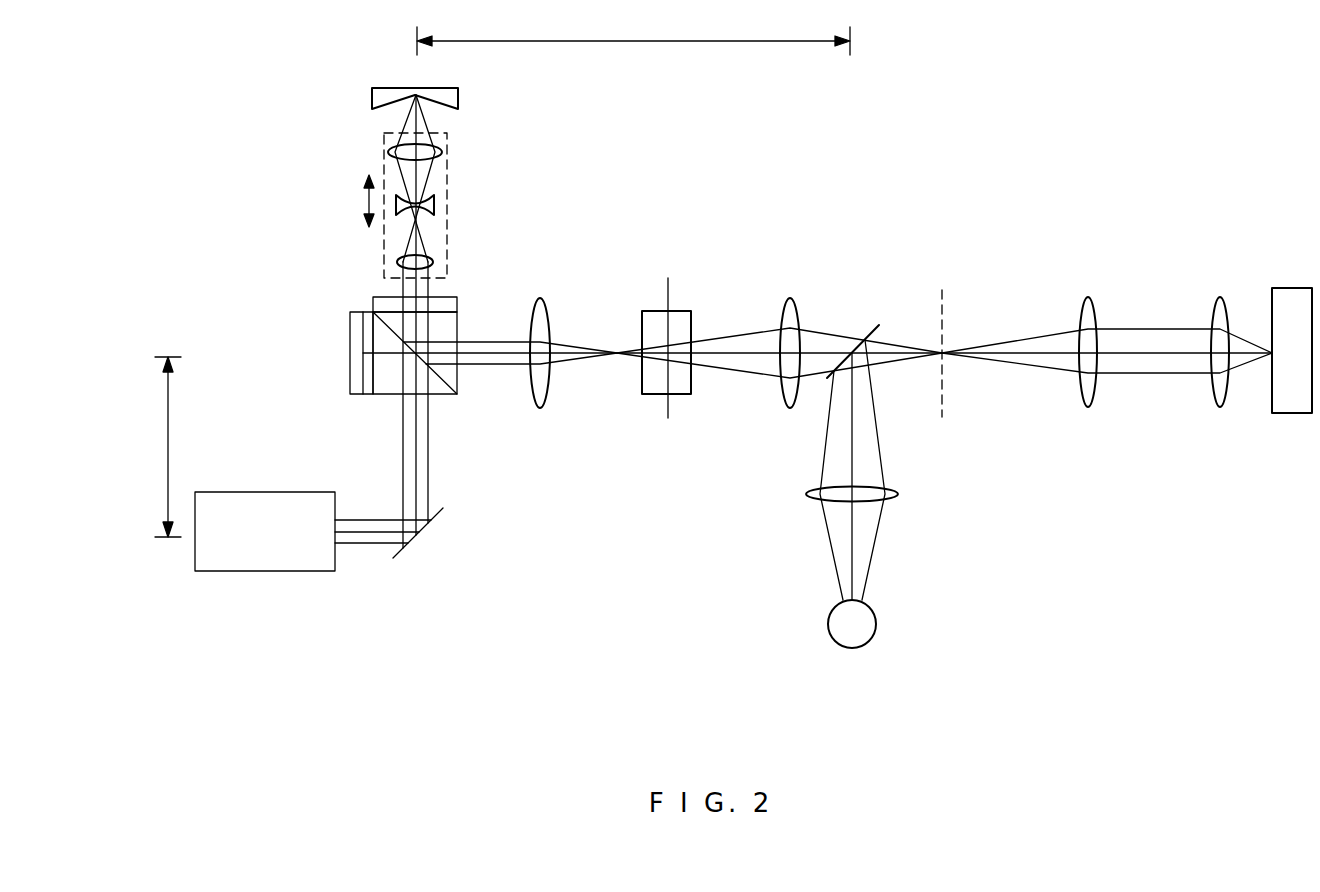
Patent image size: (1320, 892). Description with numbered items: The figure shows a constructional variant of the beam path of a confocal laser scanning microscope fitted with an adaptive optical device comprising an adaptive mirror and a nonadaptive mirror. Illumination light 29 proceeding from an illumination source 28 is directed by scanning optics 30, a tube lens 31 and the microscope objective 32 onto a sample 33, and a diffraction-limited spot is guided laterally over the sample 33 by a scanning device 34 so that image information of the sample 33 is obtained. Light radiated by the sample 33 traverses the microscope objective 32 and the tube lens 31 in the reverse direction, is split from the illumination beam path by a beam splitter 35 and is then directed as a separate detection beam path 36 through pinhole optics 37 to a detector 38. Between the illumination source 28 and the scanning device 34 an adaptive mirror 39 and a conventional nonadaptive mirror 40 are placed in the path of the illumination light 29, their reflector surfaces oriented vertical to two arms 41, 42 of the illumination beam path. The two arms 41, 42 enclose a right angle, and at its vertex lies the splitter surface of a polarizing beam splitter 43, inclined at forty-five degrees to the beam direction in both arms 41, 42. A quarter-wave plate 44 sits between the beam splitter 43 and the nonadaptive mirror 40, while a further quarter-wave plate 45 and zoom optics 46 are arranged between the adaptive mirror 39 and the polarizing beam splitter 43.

The illumination source 28 is at (313, 572).
The illumination light 29 is at (373, 540).
The scanning optics 30 is at (798, 303).
The tube lens 31 is at (1090, 405).
The microscope objective 32 is at (1214, 405).
The sample 33 is at (1302, 415).
The scanning device 34 is at (655, 395).
The beam splitter 35 is at (873, 321).
The detection beam path 36 is at (843, 460).
The pinhole optics 37 is at (898, 492).
The detector 38 is at (875, 632).
The adaptive mirror 39 is at (372, 98).
The nonadaptive mirror 40 is at (352, 395).
The arm of the illumination beam path 41 is at (153, 447).
The arm of the illumination beam path 42 is at (633, 30).
The polarizing beam splitter 43 is at (457, 385).
The quarter-wave plate 44 is at (373, 312).
The quarter-wave plate 45 is at (457, 302).
The zoom optics 46 is at (447, 184).